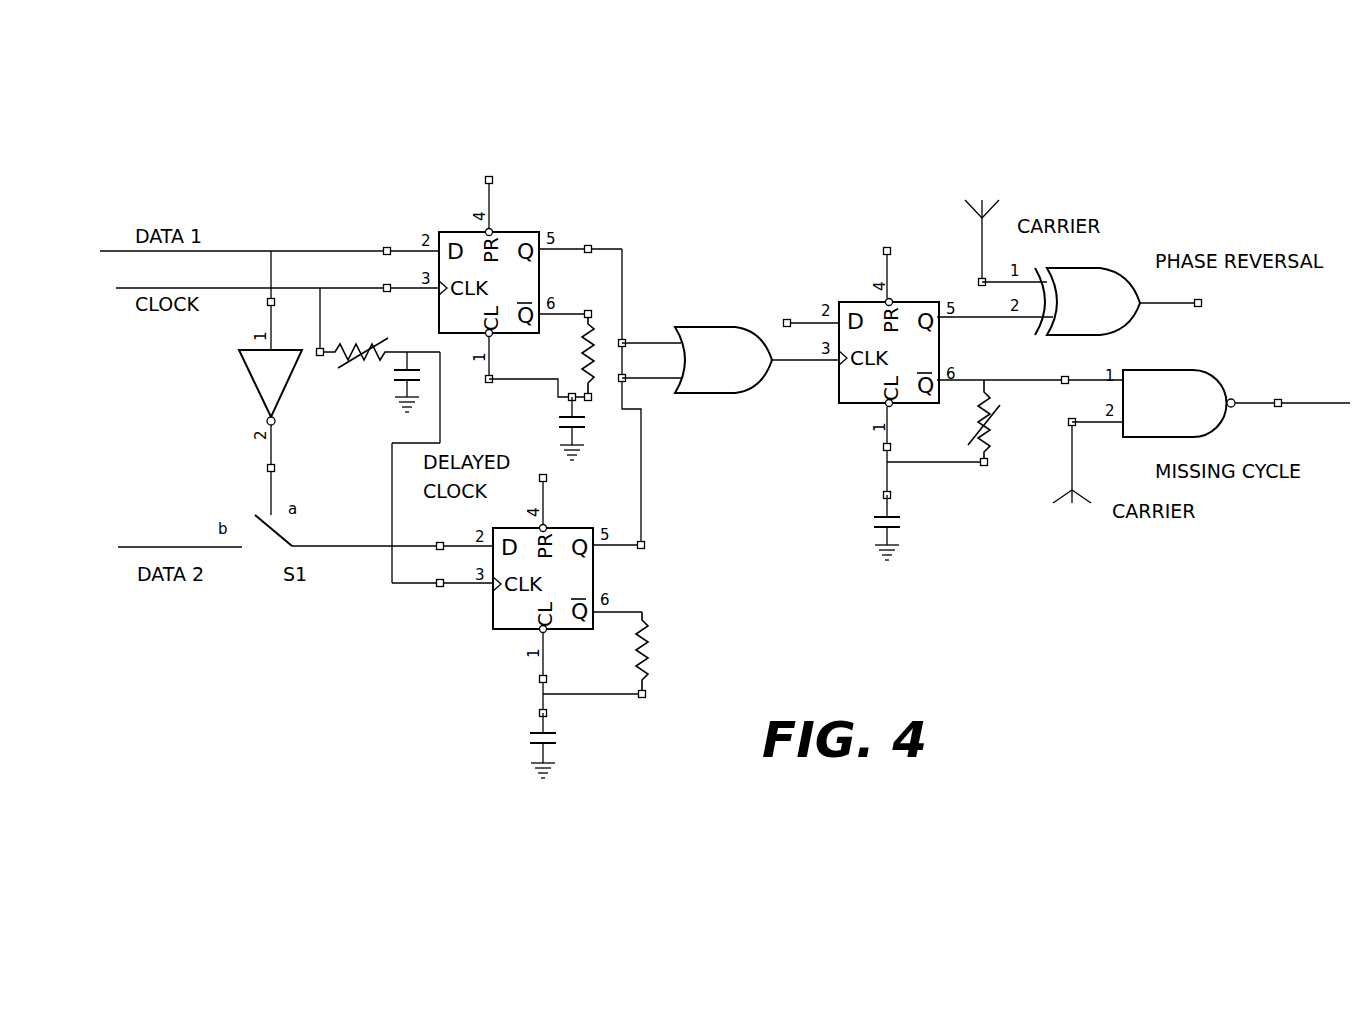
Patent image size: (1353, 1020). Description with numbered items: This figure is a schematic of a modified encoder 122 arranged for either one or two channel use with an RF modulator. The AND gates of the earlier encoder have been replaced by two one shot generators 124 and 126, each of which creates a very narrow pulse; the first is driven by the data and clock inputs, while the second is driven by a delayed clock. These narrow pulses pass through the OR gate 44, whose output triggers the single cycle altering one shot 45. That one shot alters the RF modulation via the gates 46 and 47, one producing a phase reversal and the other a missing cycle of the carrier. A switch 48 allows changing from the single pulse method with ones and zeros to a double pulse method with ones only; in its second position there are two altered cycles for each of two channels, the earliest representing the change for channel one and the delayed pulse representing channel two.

The modified encoder 122 is at (693, 248).
The one shot generator 124 is at (508, 243).
The one shot generator 126 is at (495, 607).
The OR gate 44 is at (730, 387).
The single cycle altering one shot 45 is at (907, 303).
The gate 46 is at (1113, 282).
The gate 47 is at (1185, 373).
The switch 48 is at (263, 558).